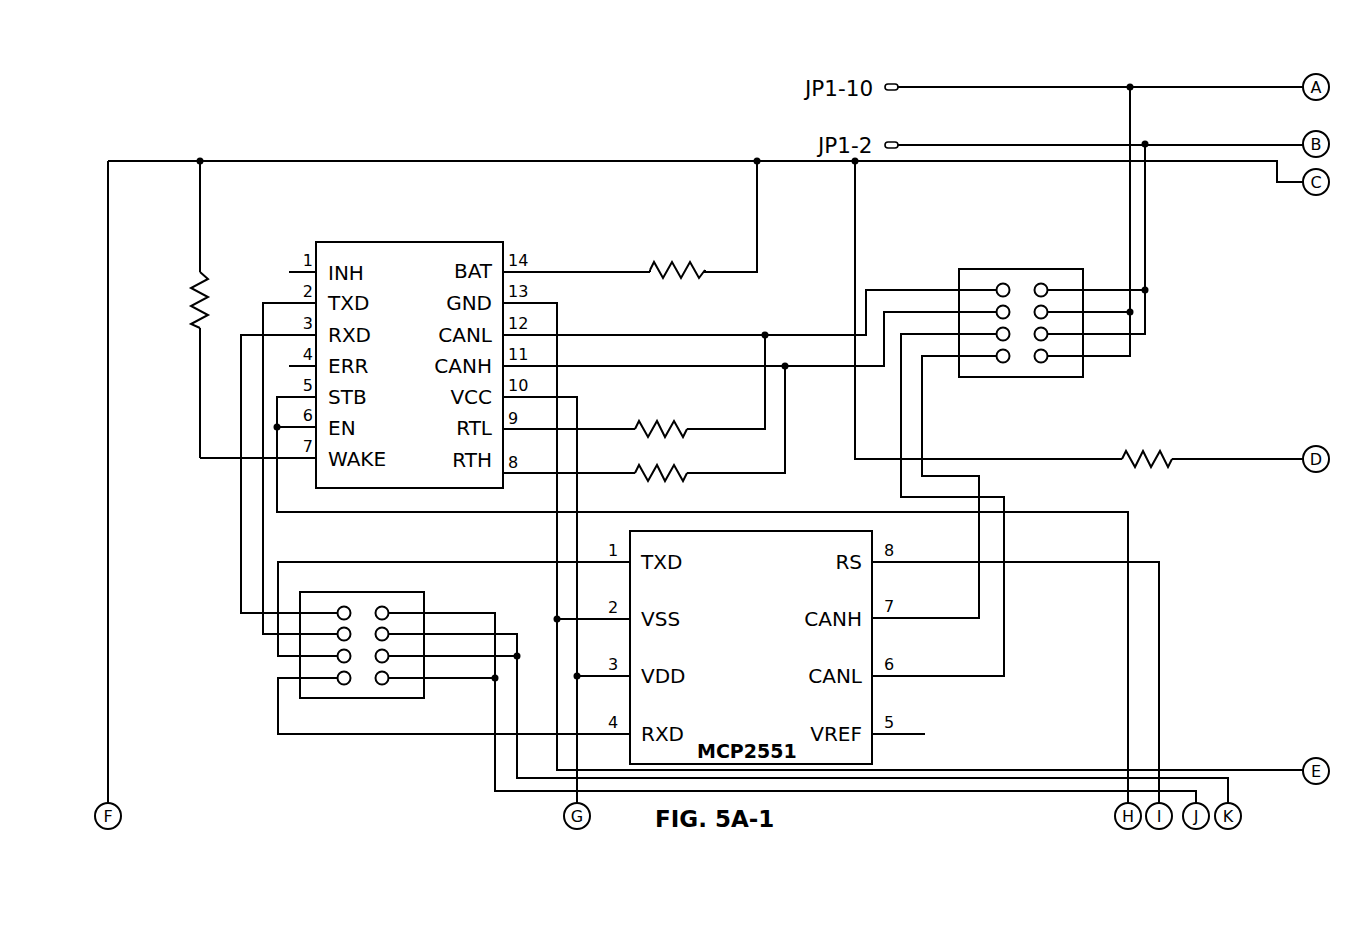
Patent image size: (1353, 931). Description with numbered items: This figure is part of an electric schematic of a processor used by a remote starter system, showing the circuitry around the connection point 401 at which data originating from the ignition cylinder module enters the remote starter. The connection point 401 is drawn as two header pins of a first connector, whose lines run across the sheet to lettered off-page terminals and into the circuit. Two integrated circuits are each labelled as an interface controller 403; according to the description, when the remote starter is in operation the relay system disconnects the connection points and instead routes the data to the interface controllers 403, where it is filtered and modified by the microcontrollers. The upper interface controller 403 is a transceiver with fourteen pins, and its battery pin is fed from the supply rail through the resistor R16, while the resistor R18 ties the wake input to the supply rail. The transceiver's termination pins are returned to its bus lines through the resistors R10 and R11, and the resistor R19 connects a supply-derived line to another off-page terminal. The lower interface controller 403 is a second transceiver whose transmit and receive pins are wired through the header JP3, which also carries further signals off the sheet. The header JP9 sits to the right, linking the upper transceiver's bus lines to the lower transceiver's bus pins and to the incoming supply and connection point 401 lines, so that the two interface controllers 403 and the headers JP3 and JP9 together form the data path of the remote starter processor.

The connection point 401 is at (802, 87).
The interface controller 403 is at (430, 242).
The resistor 3.9K R10 is at (683, 425).
The resistor 3.9K R11 is at (684, 487).
The resistor 1K R16 is at (677, 270).
The resistor 10K R18 is at (201, 309).
The resistor 10K R19 is at (1147, 463).
The header JP3 is at (362, 633).
The header JP9 is at (1021, 310).